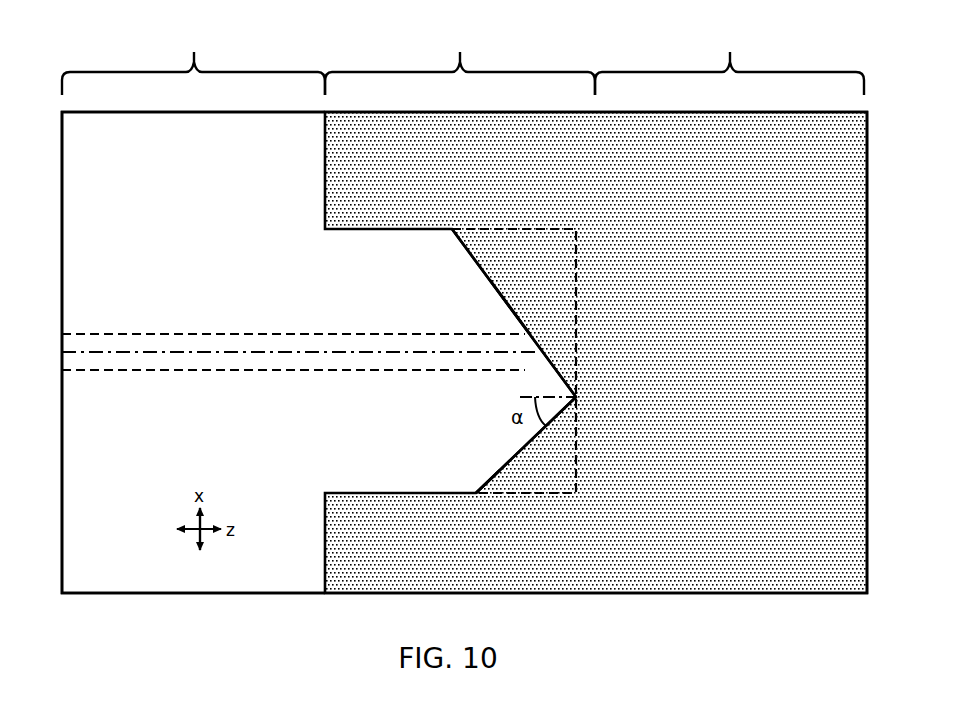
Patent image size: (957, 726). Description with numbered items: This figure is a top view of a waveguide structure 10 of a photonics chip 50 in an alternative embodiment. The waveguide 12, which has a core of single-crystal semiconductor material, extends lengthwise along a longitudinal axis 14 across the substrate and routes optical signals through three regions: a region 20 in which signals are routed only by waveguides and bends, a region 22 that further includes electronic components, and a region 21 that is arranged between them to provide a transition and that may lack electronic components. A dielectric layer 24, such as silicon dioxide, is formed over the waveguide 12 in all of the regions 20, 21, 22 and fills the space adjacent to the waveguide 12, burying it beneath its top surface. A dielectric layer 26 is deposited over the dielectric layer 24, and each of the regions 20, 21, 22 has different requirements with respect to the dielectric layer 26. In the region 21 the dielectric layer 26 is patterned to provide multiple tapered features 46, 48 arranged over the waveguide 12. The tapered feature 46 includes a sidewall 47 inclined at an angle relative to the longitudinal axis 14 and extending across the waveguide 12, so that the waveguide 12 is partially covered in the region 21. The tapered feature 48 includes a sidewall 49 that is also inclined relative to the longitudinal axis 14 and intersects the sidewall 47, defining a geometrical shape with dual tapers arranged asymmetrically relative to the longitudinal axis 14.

The waveguide structure 10 is at (190, 197).
The waveguide 12 is at (137, 363).
The longitudinal axis 14 is at (90, 353).
The region 20 is at (193, 57).
The region 21 is at (460, 57).
The region 22 is at (729, 57).
The dielectric layer 24 is at (121, 540).
The dielectric layer 26 is at (363, 186).
The tapered feature 46 is at (498, 299).
The sidewall 47 is at (466, 252).
The tapered feature 48 is at (483, 478).
The sidewall 49 is at (505, 458).
The photonics chip 50 is at (463, 52).